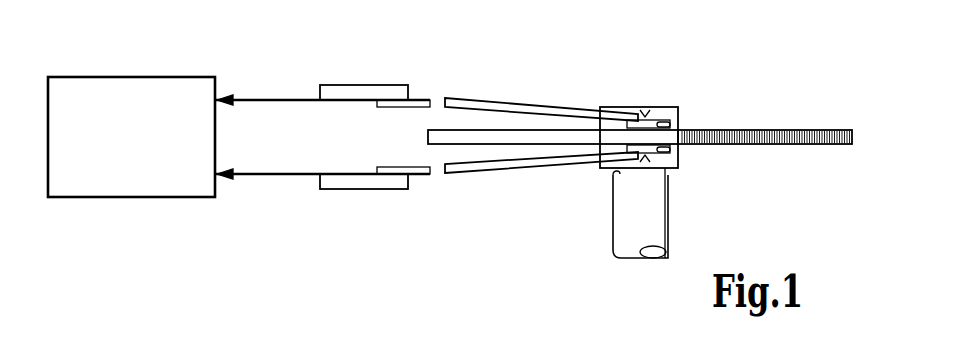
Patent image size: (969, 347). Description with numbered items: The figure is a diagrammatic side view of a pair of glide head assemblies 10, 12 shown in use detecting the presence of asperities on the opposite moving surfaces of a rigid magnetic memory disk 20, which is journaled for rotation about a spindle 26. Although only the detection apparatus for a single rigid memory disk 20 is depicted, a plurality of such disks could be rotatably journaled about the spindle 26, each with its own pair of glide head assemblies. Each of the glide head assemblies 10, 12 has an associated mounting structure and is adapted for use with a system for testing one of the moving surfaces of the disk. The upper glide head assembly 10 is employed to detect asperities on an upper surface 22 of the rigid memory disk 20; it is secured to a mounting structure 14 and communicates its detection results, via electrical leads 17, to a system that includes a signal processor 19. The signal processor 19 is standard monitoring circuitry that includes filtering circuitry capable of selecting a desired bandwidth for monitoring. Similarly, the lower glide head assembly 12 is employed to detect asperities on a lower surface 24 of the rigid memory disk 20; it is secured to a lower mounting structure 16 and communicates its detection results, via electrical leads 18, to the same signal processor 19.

The upper glide head assembly 10 is at (528, 90).
The lower glide head assembly 12 is at (558, 196).
The mounting structure 14 is at (352, 92).
The lower mounting structure 16 is at (360, 177).
The electrical leads 17 is at (250, 98).
The electrical leads 18 is at (280, 177).
The signal processor 19 is at (120, 75).
The rigid magnetic memory disk 20 is at (707, 130).
The upper surface 22 is at (800, 130).
The lower surface 24 is at (760, 144).
The spindle 26 is at (678, 170).